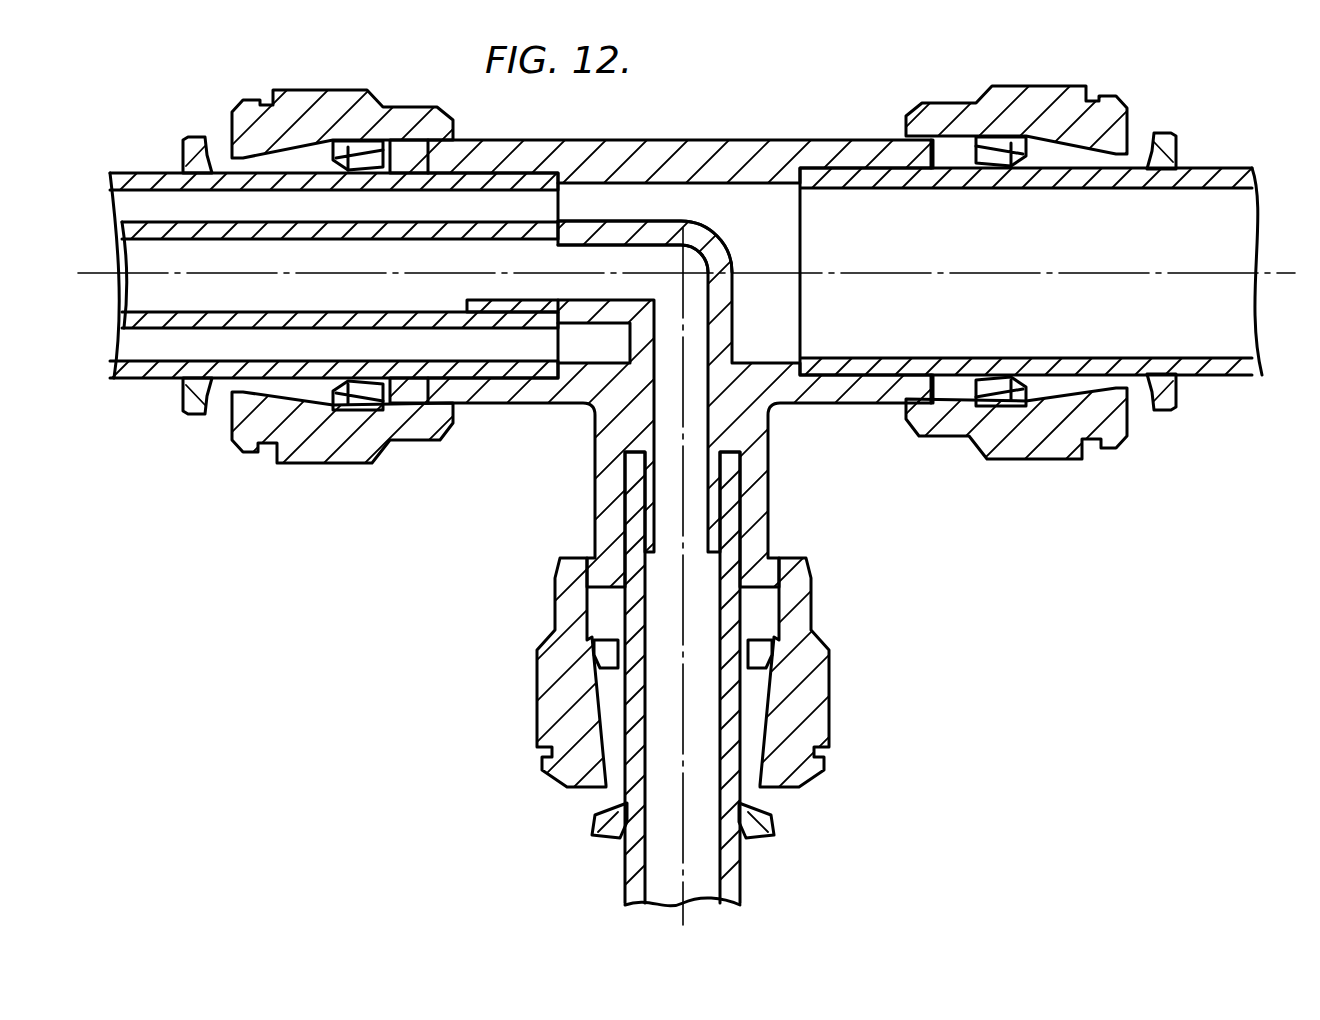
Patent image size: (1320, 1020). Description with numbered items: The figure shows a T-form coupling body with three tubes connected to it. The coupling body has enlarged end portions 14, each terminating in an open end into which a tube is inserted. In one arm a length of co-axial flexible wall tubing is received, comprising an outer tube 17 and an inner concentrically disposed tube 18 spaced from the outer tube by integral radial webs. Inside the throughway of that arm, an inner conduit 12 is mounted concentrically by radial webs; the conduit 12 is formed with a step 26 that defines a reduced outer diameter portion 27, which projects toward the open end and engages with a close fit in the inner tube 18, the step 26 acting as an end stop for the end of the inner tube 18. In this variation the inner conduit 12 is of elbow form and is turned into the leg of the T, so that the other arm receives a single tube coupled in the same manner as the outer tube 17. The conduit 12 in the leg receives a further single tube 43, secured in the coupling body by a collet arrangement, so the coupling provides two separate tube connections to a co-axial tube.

The inner conduit 12 is at (678, 228).
The enlarged end portion 14 is at (322, 96).
The outer tube 17 is at (133, 174).
The inner tube 18 is at (150, 330).
The step 26 is at (597, 232).
The reduced outer diameter portion 27 is at (467, 298).
The further single tube 43 is at (741, 878).